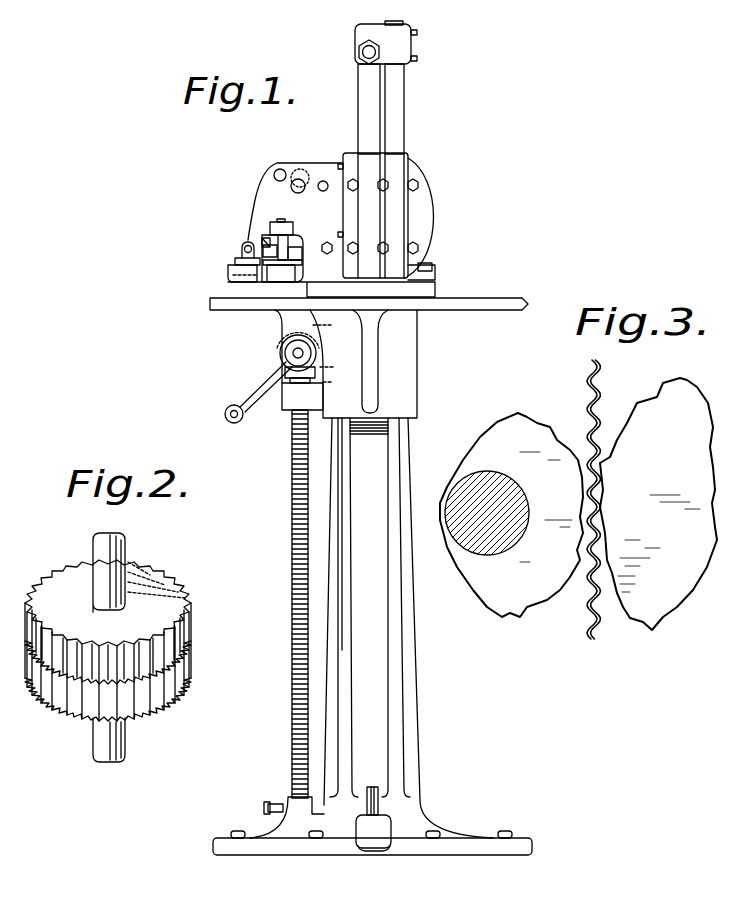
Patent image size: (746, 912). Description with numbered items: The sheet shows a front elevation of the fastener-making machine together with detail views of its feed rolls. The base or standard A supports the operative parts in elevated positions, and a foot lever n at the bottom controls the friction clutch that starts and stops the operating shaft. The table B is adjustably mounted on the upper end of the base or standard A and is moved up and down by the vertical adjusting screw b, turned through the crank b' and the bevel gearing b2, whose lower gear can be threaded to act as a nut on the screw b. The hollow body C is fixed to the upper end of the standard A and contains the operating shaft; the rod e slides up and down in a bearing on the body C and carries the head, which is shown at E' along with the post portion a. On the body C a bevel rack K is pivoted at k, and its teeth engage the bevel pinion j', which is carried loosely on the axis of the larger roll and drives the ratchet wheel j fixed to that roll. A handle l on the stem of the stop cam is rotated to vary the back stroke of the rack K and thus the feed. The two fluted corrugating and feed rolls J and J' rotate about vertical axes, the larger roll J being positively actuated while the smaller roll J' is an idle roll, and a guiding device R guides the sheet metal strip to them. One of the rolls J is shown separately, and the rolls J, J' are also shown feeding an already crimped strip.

In FIG. 1, the cap or head of the standard E' is at (408, 42).
In FIG. 1, the rod e is at (396, 121).
In FIG. 1, the post member a is at (356, 130).
In FIG. 1, the hollow body C is at (438, 206).
In FIG. 1, the pivot k is at (280, 170).
In FIG. 1, the handle l is at (291, 182).
In FIG. 1, the bevel pinion j' is at (235, 225).
In FIG. 1, the bevel rack K is at (260, 240).
In FIG. 1, the larger corrugating and feed roll J is at (250, 292).
In FIG. 2, the larger corrugating and feed roll J is at (108, 647).
In FIG. 3, the larger corrugating and feed roll J is at (658, 504).
In FIG. 1, the smaller corrugating and feed roll J' is at (230, 287).
In FIG. 3, the smaller corrugating and feed roll J' is at (511, 535).
In FIG. 1, the guiding device R is at (238, 258).
In FIG. 1, the ratchet wheel j is at (188, 289).
In FIG. 2, the ratchet wheel j is at (180, 591).
In FIG. 1, the table B is at (452, 303).
In FIG. 1, the bevel gearing b2 is at (284, 360).
In FIG. 1, the crank b' is at (251, 392).
In FIG. 1, the vertical adjusting screw b is at (282, 624).
In FIG. 1, the base or standard A is at (382, 672).
In FIG. 1, the foot lever n is at (378, 840).